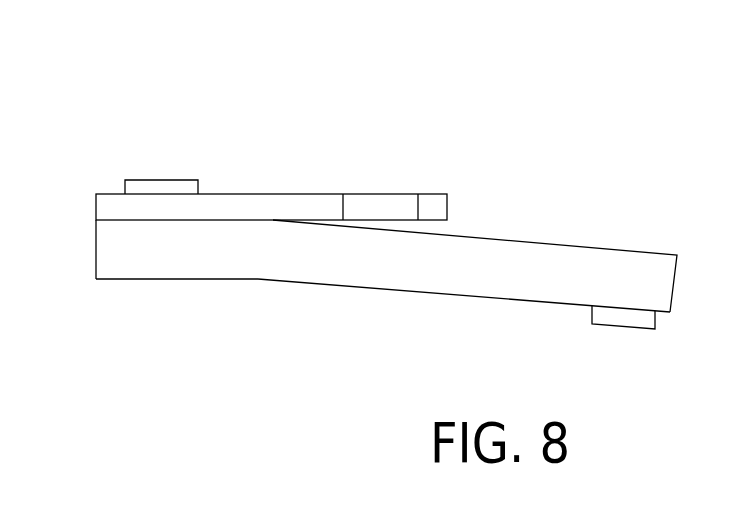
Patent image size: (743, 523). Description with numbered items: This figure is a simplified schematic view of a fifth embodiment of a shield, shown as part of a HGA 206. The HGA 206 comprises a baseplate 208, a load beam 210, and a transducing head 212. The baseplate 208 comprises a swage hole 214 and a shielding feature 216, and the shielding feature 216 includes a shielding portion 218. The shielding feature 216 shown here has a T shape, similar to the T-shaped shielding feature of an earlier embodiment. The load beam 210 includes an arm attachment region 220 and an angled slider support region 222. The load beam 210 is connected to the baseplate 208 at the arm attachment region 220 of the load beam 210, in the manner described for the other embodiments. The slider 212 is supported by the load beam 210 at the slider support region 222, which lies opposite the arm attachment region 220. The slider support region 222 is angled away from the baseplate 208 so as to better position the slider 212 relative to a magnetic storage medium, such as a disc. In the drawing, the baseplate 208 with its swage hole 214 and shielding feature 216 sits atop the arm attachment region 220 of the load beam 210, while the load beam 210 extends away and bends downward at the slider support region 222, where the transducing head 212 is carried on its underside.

The HGA 206 is at (427, 107).
The baseplate 208 is at (117, 205).
The load beam 210 is at (530, 257).
The transducing head 212 is at (630, 320).
The swage hole 214 is at (175, 185).
The shielding feature 216 is at (392, 197).
The shielding portion 218 is at (435, 208).
The arm attachment region 220 is at (173, 282).
The angled slider support region 222 is at (403, 293).